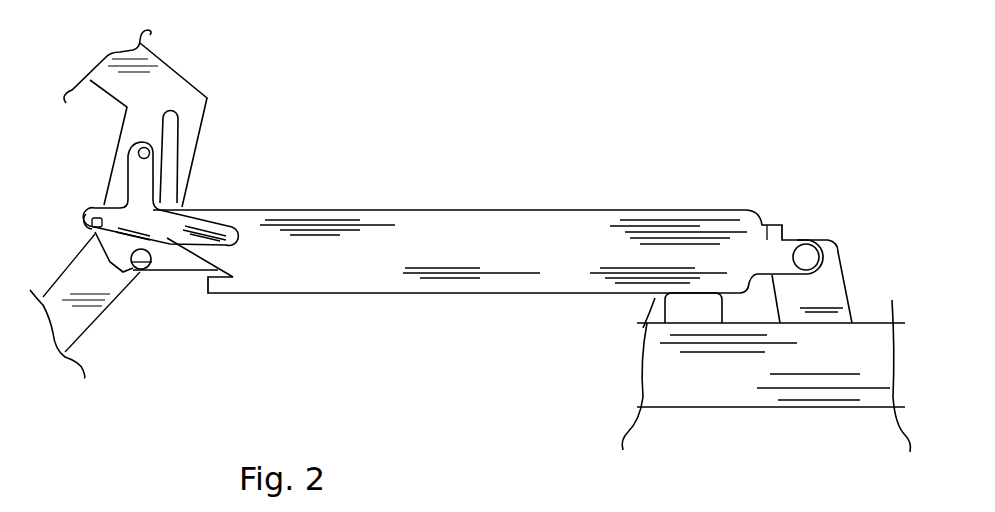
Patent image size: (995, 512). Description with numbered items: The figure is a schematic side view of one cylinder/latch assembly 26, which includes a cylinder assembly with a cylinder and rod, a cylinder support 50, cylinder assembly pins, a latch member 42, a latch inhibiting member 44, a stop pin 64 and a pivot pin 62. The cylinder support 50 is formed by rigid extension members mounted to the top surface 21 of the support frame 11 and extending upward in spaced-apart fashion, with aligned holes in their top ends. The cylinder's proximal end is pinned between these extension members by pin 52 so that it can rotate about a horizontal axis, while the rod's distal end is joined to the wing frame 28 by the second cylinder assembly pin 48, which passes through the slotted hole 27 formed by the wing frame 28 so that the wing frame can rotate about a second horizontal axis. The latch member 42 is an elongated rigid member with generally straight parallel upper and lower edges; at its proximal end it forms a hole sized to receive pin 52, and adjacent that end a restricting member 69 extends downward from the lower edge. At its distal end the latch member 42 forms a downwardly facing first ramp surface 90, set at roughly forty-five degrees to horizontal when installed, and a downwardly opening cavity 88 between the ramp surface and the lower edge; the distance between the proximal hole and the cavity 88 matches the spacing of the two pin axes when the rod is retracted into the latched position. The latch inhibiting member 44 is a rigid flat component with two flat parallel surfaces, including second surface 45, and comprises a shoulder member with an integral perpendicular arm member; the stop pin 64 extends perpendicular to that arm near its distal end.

The support frame 11 is at (722, 383).
The top surface 21 is at (770, 323).
The cylinder/latch assembly 26 is at (407, 152).
The slotted hole 27 is at (175, 140).
The wing frame 28 is at (168, 82).
The latch member 42 is at (382, 262).
The latch inhibiting member 44 is at (170, 245).
The second flat surface 45 is at (83, 229).
The second cylinder assembly pin 48 is at (140, 272).
The cylinder support 50 is at (838, 265).
The pin 52 is at (808, 244).
The pivot pin 62 is at (86, 214).
The stop pin 64 is at (128, 155).
The restricting member 69 is at (657, 325).
The cavity 88 is at (153, 272).
The first ramp surface 90 is at (97, 238).